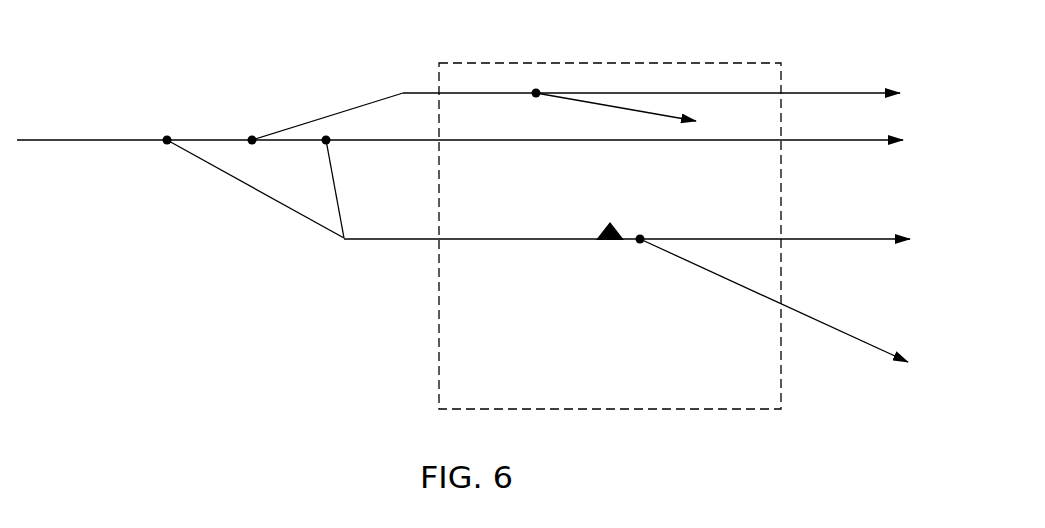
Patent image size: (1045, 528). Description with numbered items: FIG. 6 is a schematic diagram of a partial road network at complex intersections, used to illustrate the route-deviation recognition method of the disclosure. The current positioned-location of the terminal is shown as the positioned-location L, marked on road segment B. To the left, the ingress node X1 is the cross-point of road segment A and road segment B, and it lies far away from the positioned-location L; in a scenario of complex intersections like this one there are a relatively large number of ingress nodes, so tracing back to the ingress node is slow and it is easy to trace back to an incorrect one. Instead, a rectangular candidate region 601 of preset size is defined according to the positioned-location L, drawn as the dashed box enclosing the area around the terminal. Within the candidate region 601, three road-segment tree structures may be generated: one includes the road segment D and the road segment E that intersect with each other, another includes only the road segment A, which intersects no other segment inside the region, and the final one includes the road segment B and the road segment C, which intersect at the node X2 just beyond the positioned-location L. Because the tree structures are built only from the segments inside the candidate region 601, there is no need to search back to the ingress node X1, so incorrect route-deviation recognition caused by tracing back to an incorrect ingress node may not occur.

The rectangular candidate region 601 is at (758, 63).
The ingress node X1 is at (159, 155).
The node X2 is at (641, 227).
The positioned-location L is at (604, 224).
The road segment A is at (926, 148).
The road segment B is at (926, 261).
The road segment C is at (926, 384).
The road segment D is at (918, 95).
The road segment E is at (707, 122).